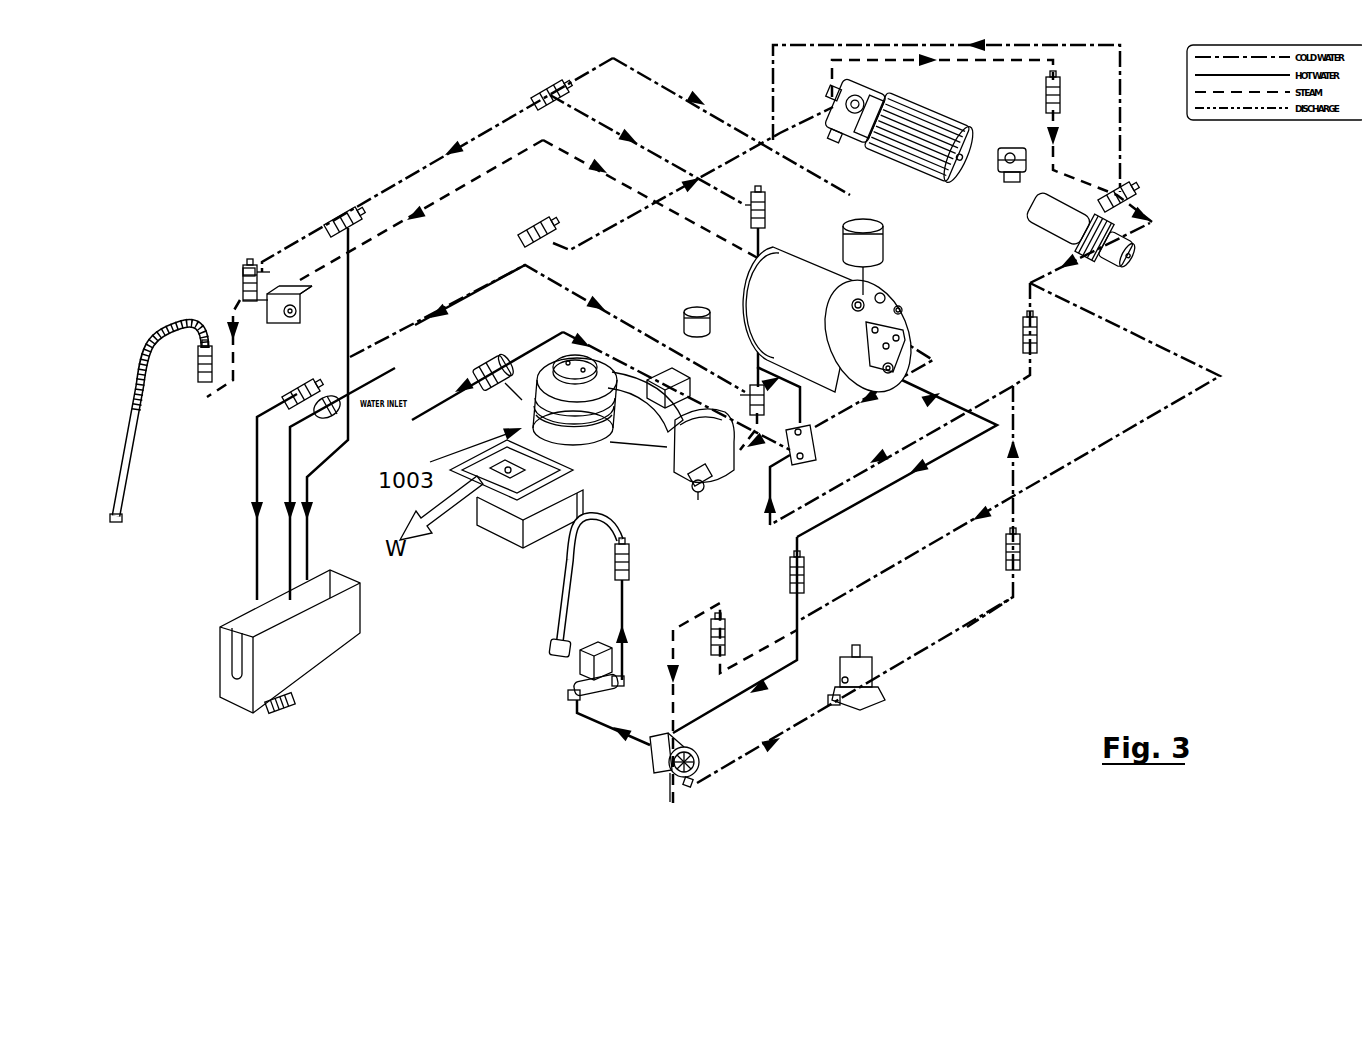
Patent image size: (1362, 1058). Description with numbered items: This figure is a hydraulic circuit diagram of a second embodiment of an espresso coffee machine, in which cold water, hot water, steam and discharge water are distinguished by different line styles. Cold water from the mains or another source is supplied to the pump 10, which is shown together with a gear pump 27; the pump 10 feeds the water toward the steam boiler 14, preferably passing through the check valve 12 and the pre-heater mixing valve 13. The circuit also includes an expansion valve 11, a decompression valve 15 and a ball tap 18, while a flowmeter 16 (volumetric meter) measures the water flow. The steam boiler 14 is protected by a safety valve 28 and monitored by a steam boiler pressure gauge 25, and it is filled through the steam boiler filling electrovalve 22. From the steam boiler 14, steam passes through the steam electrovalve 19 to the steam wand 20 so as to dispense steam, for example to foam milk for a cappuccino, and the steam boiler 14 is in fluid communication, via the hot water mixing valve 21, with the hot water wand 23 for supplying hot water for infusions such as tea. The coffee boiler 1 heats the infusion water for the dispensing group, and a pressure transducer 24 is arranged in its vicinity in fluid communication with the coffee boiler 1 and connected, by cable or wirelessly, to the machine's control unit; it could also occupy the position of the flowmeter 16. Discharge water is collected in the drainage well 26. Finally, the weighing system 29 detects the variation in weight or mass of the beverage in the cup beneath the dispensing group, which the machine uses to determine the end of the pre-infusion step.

The coffee boiler 1 is at (667, 447).
The pump 10 is at (935, 115).
The expansion valve 11 is at (300, 385).
The check valve 12 is at (1062, 100).
The pre-heater mixing valve 13 is at (790, 456).
The steam boiler 14 is at (890, 293).
The decompression valve 15 is at (247, 265).
The flowmeter (volumetric meter) 16 is at (1005, 170).
The ball tap 18 is at (696, 492).
The steam electrovalve 19 is at (266, 323).
The steam wand 20 is at (118, 522).
The hot water mixing valve 21 is at (665, 767).
The steam boiler filling electrovalve 22 is at (866, 704).
The hot water wand 23 is at (550, 640).
The pressure transducer 24 is at (482, 388).
The steam boiler pressure gauge 25 is at (690, 306).
The drainage well 26 is at (292, 660).
The gear pump 27 is at (1105, 252).
The safety valve 28 is at (885, 254).
The weighing system 29 is at (488, 522).